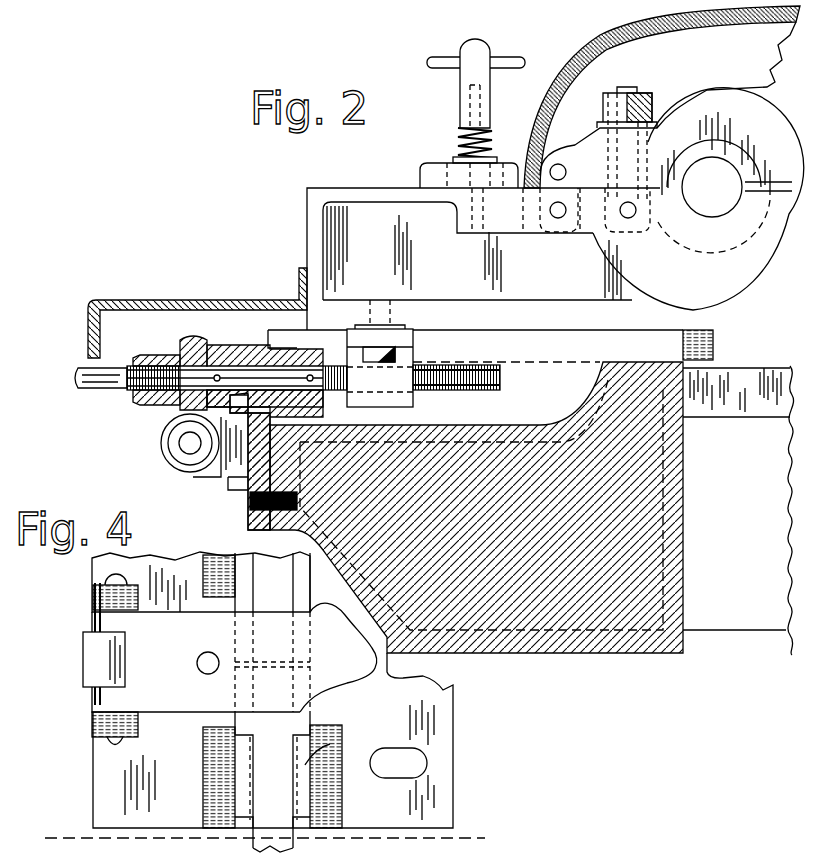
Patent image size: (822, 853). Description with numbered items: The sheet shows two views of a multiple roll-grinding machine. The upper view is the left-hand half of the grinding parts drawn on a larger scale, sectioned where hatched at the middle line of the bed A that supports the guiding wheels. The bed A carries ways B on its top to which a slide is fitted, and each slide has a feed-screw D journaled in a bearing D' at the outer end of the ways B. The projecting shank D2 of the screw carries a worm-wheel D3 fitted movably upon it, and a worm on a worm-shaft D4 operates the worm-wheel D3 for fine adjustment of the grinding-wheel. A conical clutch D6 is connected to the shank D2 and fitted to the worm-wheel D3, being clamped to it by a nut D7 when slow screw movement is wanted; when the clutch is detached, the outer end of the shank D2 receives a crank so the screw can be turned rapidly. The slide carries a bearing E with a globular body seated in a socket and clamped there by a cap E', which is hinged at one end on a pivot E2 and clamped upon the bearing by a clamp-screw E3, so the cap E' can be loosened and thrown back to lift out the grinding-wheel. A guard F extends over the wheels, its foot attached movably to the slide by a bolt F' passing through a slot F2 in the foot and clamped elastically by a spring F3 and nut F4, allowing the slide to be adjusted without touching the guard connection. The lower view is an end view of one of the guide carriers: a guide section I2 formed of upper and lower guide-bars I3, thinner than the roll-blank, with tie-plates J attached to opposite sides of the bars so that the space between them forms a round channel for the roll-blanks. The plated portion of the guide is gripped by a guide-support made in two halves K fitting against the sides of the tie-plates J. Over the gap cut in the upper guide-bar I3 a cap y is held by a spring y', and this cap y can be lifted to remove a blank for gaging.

In FIG. 2, the bed A is at (532, 508).
In FIG. 2, the ways B is at (290, 328).
In FIG. 2, the feed-screw D is at (320, 366).
In FIG. 2, the bearing D' is at (265, 425).
In FIG. 2, the shank D2 is at (76, 378).
In FIG. 2, the worm-wheel D3 is at (192, 336).
In FIG. 2, the worm-shaft D4 is at (188, 443).
In FIG. 2, the conical clutch D6 is at (168, 356).
In FIG. 2, the nut D7 is at (135, 400).
In FIG. 2, the bearing E is at (743, 187).
In FIG. 2, the cap E' is at (698, 199).
In FIG. 2, the pivot E2 is at (558, 163).
In FIG. 2, the clamp-screw E3 is at (628, 92).
In FIG. 2, the guard F is at (662, 97).
In FIG. 2, the bolt F' is at (449, 177).
In FIG. 2, the slot F2 is at (455, 163).
In FIG. 2, the spring F3 is at (462, 142).
In FIG. 2, the nut F4 is at (492, 108).
In FIG. 4, the guide section I2 is at (260, 702).
In FIG. 4, the guide-bar I3 is at (248, 757).
In FIG. 4, the tie-plate J is at (330, 742).
In FIG. 4, the guide-support half K is at (203, 784).
In FIG. 4, the cap y is at (134, 659).
In FIG. 4, the spring y' is at (86, 659).